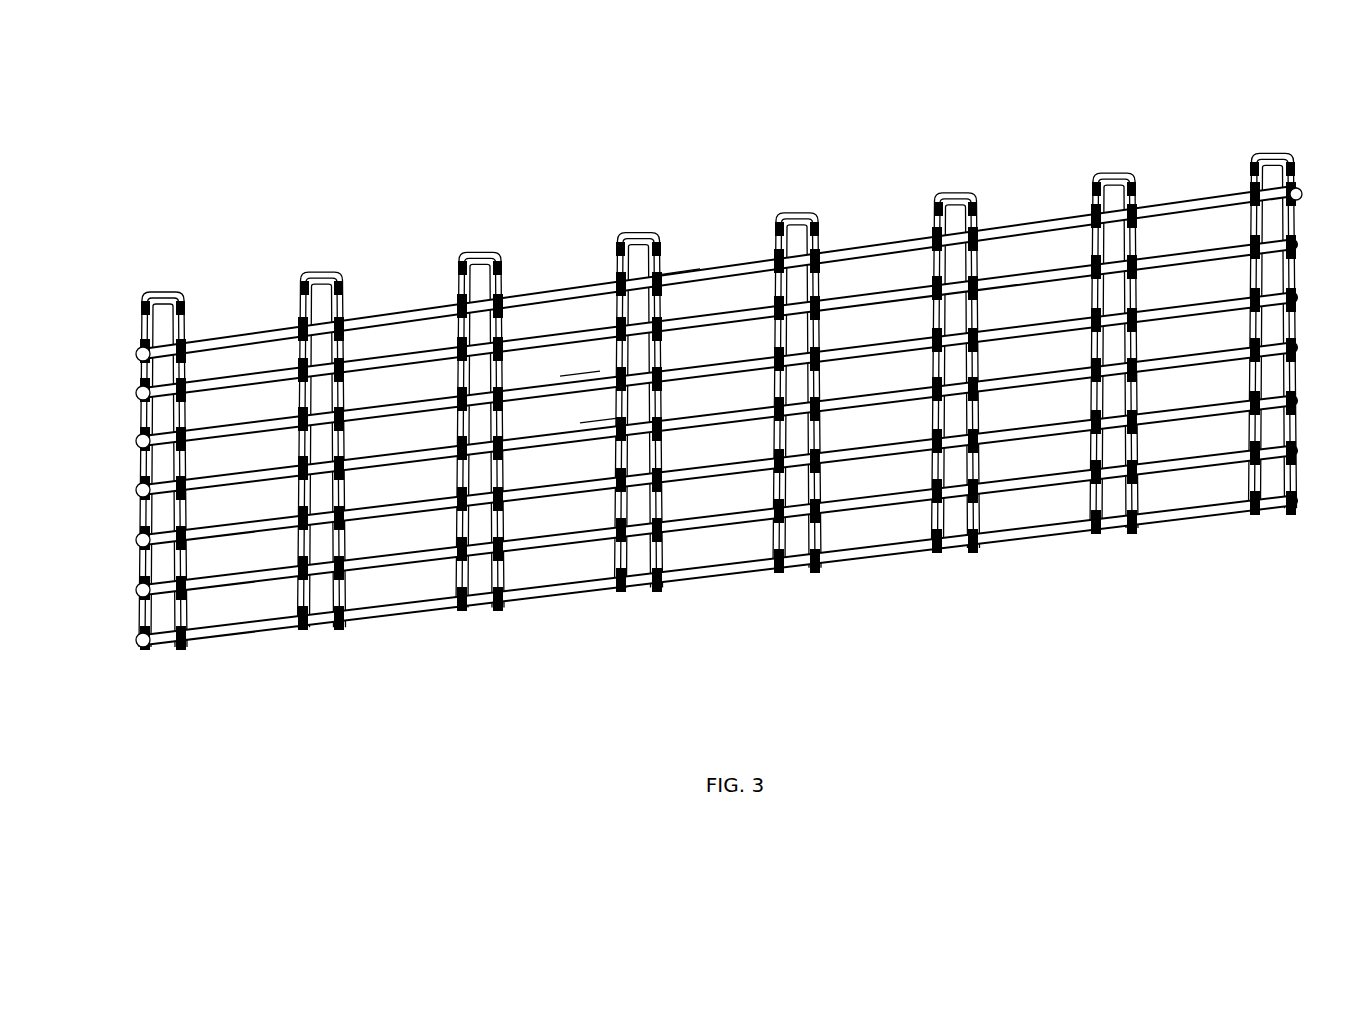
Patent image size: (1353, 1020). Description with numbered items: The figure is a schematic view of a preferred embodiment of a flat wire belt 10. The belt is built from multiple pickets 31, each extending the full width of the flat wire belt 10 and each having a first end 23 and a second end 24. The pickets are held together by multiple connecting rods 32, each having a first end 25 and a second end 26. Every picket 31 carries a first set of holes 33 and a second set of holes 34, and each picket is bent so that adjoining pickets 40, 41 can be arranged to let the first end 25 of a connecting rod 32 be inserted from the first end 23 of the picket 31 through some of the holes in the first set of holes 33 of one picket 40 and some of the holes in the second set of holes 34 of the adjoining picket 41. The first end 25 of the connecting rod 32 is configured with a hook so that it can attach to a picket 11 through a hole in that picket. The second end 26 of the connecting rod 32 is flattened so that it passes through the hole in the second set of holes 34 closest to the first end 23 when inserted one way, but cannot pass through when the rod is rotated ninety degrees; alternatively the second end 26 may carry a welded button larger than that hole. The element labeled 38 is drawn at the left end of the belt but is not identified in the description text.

The flat wire belt 10 is at (225, 268).
The picket 11 is at (457, 249).
The first end of picket 23 is at (72, 306).
The second end of picket 24 is at (1289, 115).
The first end of connecting rod 25 is at (670, 268).
The second end of connecting rod 26 is at (130, 348).
The picket 31 is at (455, 437).
The connecting rod 32 is at (857, 221).
The first set of holes 33 is at (823, 210).
The second set of holes 34 is at (611, 275).
The end rod cap 38 is at (130, 437).
The picket 40 is at (603, 398).
The adjoining picket 41 is at (587, 352).